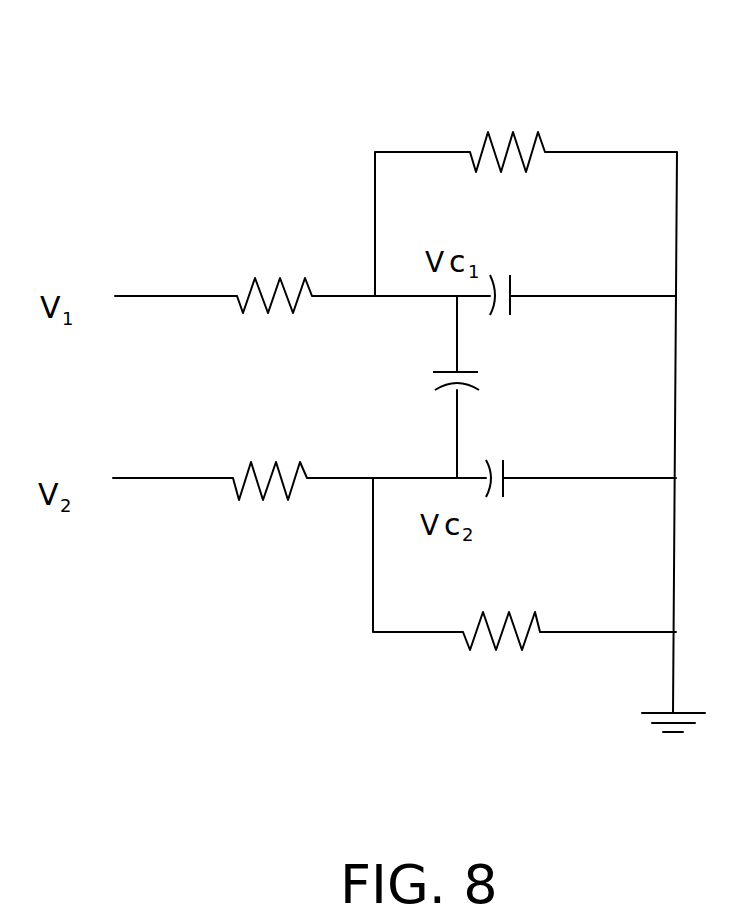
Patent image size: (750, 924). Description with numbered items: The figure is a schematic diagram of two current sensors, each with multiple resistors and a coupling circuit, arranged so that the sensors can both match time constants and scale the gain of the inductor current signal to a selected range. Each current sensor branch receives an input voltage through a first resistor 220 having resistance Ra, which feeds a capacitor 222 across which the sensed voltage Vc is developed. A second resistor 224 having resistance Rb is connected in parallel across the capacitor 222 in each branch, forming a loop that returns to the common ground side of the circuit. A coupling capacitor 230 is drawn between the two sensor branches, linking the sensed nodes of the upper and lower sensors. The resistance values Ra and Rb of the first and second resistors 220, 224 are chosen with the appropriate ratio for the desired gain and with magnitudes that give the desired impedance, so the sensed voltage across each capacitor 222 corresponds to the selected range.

The first resistor 220 is at (240, 306).
The capacitor 222 is at (514, 284).
The second resistor 224 is at (533, 139).
The mutual capacitor CM 230 is at (433, 373).